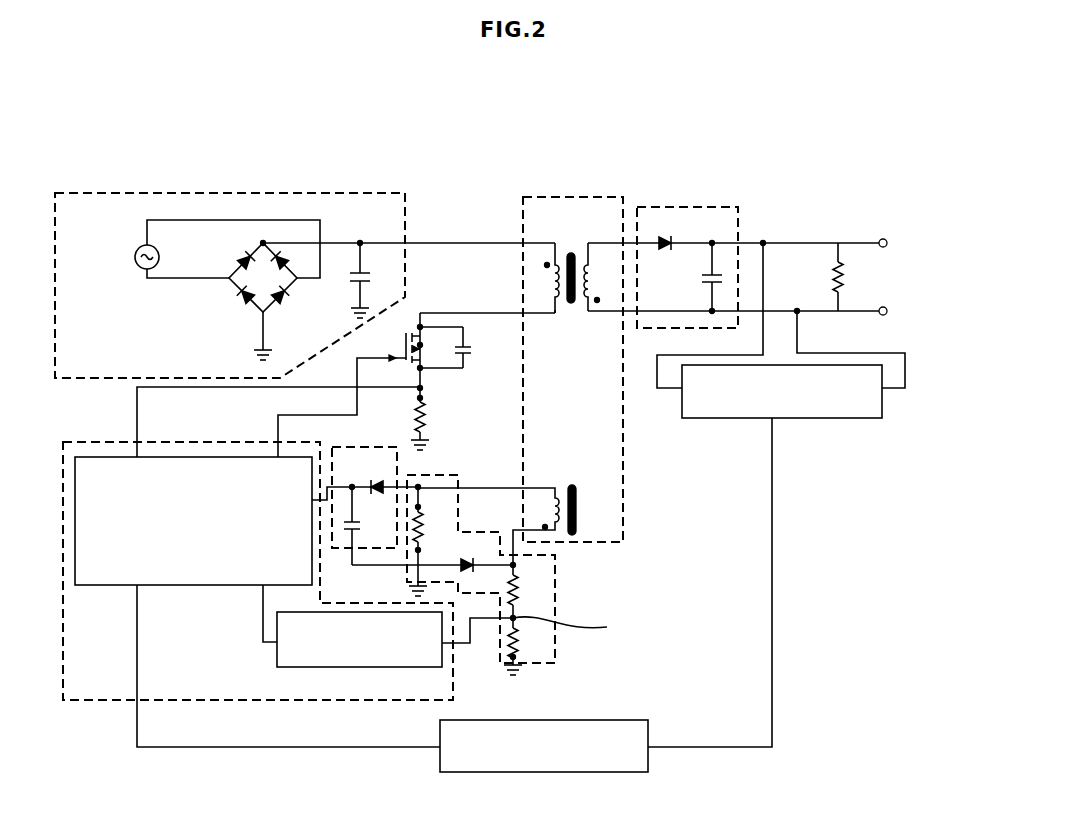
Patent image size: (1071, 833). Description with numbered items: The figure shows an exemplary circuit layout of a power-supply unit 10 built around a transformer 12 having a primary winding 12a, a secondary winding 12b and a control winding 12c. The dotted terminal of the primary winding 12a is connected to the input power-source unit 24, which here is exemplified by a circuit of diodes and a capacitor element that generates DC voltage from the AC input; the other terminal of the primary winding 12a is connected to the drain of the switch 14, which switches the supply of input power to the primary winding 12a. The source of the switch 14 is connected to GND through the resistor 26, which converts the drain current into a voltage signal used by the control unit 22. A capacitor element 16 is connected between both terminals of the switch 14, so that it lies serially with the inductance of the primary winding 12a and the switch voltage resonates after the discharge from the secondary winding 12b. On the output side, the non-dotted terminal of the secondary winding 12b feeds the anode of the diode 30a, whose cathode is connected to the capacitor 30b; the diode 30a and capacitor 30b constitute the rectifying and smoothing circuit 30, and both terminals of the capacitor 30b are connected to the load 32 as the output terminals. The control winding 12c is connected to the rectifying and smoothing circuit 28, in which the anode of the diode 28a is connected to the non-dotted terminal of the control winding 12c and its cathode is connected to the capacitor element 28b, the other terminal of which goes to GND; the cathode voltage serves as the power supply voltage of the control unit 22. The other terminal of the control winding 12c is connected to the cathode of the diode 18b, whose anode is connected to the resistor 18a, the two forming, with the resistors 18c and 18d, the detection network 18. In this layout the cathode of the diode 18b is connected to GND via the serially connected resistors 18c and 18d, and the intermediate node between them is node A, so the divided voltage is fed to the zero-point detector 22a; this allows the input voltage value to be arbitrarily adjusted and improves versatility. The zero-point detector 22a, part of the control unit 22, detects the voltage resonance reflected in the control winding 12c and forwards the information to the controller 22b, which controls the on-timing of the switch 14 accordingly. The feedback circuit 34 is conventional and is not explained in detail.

The power-supply unit 10 is at (492, 158).
The transformer 12 is at (570, 197).
The primary winding 12a is at (560, 262).
The secondary winding 12b is at (586, 262).
The control winding 12c is at (557, 488).
The switch 14 is at (370, 385).
The capacitor element 16 is at (477, 346).
The zero-point detection circuit 18 is at (433, 475).
The resistor 18a is at (433, 541).
The diode 18b is at (477, 557).
The resistor 18c is at (528, 592).
The resistor 18d is at (527, 646).
The control unit 22 is at (190, 442).
The zero-point detector 22a is at (273, 665).
The controller 22b is at (202, 585).
The input power-source unit 24 is at (240, 193).
The resistor 26 is at (431, 419).
The rectifying and smoothing circuit 28 is at (357, 447).
The diode 28a is at (375, 477).
The capacitor element 28b is at (367, 526).
The rectifying and smoothing circuit 30 is at (678, 207).
The diode 30a is at (677, 232).
The capacitor 30b is at (693, 277).
The load 32 is at (852, 277).
The feedback circuit 34 is at (540, 720).